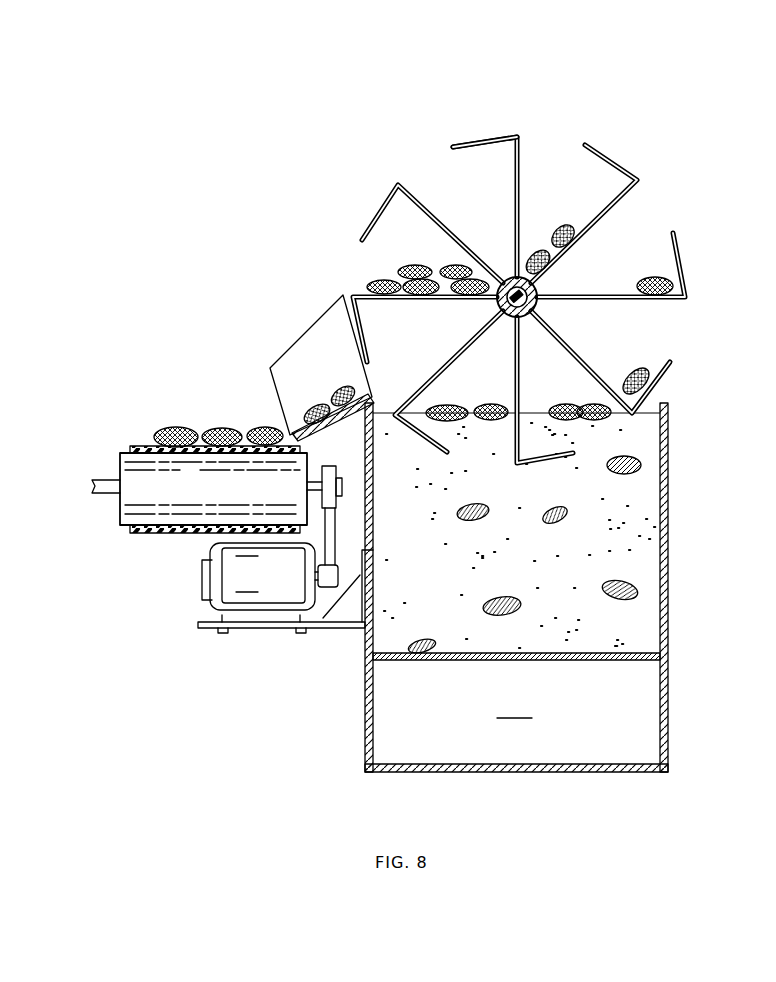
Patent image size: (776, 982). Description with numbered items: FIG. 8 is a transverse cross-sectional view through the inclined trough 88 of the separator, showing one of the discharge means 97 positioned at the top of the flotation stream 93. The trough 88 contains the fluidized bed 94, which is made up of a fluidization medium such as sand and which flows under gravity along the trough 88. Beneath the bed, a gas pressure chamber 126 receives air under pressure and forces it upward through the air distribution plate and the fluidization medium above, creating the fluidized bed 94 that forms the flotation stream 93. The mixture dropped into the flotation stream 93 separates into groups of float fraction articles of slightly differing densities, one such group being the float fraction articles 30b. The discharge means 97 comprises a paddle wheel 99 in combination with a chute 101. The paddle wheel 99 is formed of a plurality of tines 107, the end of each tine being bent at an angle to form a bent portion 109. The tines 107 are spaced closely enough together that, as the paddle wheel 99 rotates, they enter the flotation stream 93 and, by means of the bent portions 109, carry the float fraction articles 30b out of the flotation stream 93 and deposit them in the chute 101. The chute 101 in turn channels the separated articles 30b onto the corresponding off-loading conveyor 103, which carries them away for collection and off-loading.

The trough 88 is at (672, 465).
The fluidized bed 94 is at (632, 558).
The gas pressure chambers 126 is at (516, 685).
The discharge means 97 is at (550, 270).
The paddle wheel 99 is at (540, 290).
The tines 107 is at (520, 185).
The bent portions 109 is at (478, 138).
The flotation stream 93 is at (527, 412).
The chute 101 is at (296, 368).
The off-loading conveyor 103 is at (143, 446).
The float fraction articles 30b is at (183, 430).